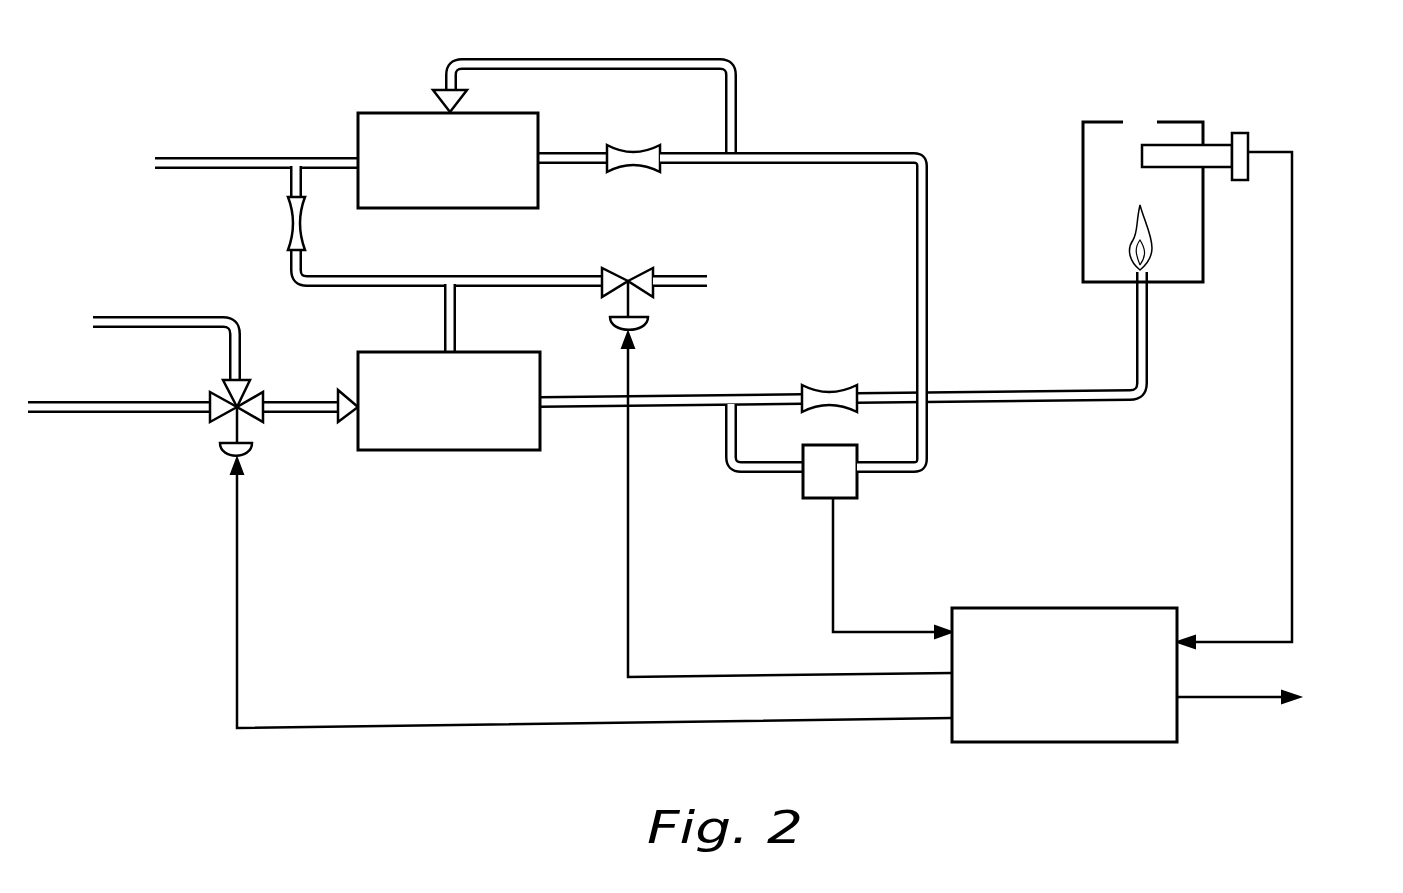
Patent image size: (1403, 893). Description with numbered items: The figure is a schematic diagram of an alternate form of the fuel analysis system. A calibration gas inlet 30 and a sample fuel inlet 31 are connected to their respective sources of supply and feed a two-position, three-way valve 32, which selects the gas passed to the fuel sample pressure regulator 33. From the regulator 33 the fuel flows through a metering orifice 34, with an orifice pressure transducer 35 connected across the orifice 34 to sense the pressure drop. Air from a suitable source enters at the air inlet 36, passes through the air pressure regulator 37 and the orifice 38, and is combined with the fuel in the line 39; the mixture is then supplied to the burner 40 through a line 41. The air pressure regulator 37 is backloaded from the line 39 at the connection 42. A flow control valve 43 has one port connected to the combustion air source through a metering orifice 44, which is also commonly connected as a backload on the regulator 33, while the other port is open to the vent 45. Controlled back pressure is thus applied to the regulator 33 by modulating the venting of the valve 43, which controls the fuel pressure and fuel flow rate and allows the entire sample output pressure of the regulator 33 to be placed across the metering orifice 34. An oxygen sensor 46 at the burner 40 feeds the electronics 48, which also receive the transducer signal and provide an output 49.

The calibration gas inlet 30 is at (198, 412).
The sample fuel inlet 31 is at (205, 316).
The two-position, three-way valve 32 is at (255, 415).
The fuel sample pressure regulator 33 is at (445, 452).
The metering orifice 34 is at (825, 396).
The orifice pressure transducer 35 is at (843, 490).
The air inlet 36 is at (197, 168).
The air pressure regulator 37 is at (398, 120).
The orifice 38 is at (650, 160).
The line 39 is at (927, 280).
The burner 40 is at (1098, 183).
The burner supply conduit 41 is at (1148, 341).
The backload connection 42 is at (588, 58).
The flow control valve 43 is at (625, 276).
The metering orifice 44 is at (300, 228).
The vent 45 is at (701, 276).
The oxygen sensor 46 is at (1212, 158).
The electronics 48 is at (1050, 730).
The output 49 is at (1258, 700).